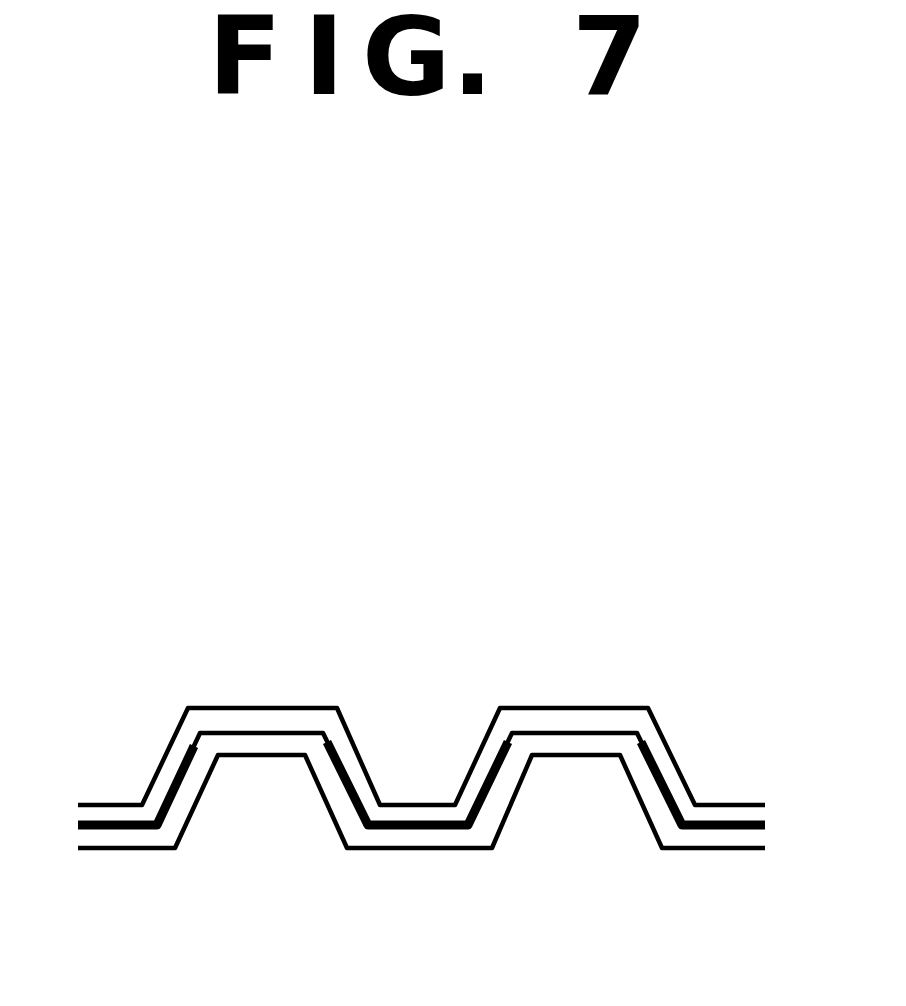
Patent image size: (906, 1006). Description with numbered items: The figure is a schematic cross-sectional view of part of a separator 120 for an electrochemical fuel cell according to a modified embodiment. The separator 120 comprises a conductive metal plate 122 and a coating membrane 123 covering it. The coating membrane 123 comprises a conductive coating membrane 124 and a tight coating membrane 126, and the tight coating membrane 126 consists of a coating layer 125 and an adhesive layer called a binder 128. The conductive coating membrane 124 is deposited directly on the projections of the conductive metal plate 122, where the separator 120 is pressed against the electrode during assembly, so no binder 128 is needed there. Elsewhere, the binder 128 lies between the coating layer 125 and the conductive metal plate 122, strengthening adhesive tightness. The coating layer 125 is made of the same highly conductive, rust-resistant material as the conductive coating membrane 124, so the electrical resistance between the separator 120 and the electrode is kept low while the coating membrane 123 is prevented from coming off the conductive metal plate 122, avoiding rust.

The separator 120 is at (623, 618).
The conductive metal plate 122 is at (470, 837).
The coating membrane 123 is at (421, 303).
The conductive coating membrane 124 is at (208, 718).
The coating layer 125 is at (341, 741).
The tight coating membrane 126 is at (520, 450).
The binder 128 is at (362, 800).